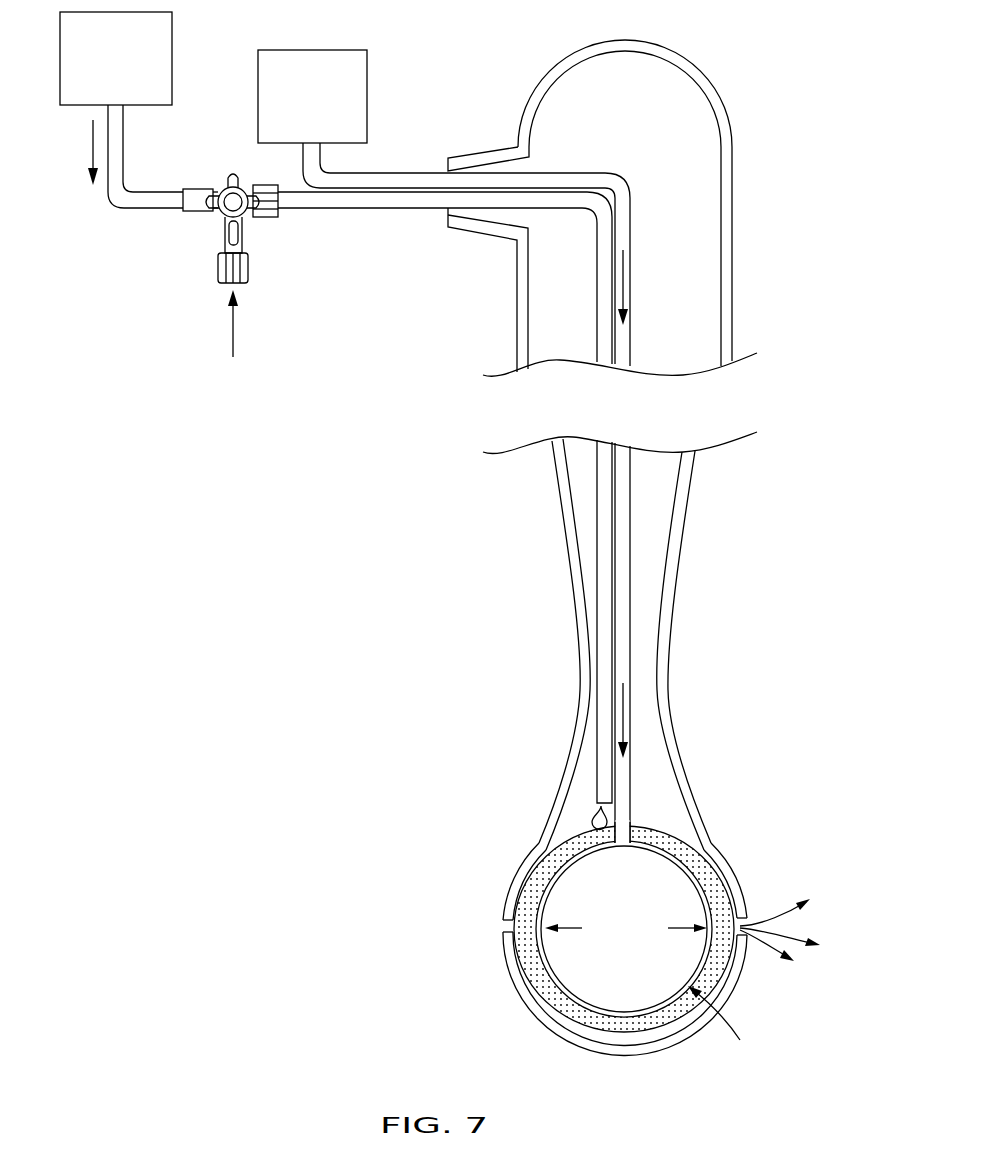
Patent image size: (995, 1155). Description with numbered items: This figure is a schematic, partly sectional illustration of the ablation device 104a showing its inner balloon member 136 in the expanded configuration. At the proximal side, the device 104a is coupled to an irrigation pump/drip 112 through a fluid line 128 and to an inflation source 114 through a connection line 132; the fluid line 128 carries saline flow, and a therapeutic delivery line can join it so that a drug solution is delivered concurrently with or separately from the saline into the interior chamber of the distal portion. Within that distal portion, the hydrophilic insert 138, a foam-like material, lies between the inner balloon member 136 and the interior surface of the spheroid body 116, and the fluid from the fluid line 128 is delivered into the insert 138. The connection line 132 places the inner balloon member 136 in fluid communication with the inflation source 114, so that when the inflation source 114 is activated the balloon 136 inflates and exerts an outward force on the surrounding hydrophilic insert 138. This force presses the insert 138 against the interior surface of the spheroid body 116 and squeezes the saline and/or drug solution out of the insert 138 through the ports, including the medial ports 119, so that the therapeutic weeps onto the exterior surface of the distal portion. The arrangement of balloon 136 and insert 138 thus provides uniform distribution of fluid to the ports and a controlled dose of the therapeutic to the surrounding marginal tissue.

The irrigation pump/drip 112 is at (100, 95).
The inflation source 114 is at (330, 132).
The fluid line 128 is at (373, 204).
The connection line 132 is at (409, 180).
The ablation device 104a is at (742, 96).
The spheroid body 116 is at (512, 882).
The hydrophilic insert 138 is at (533, 974).
The inner balloon member 136 is at (608, 1001).
The medial ports 119 is at (748, 917).